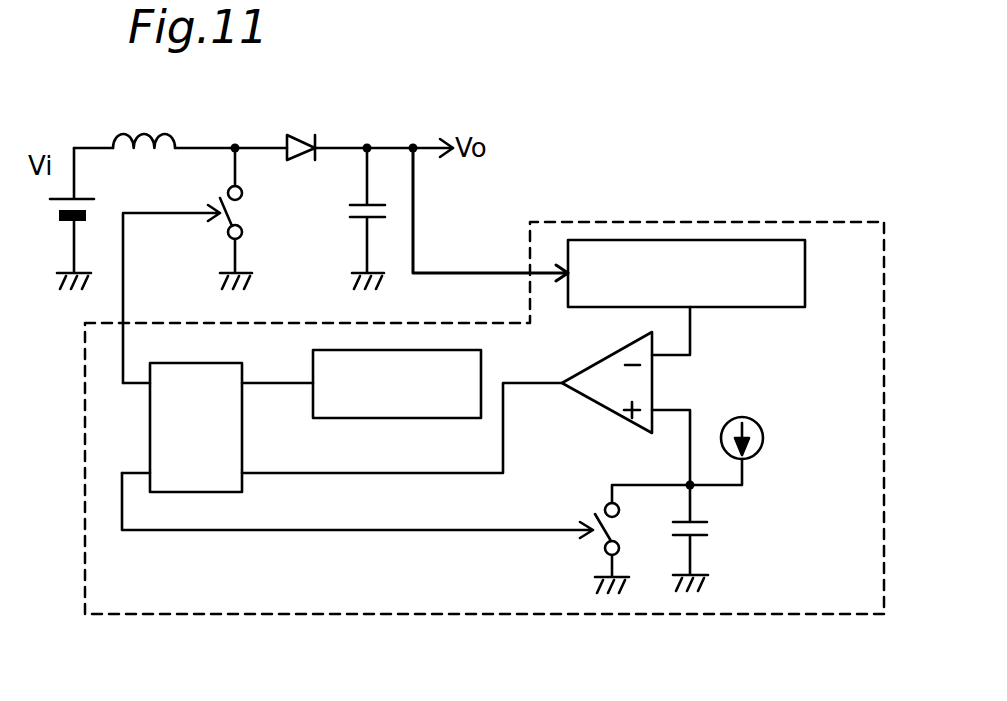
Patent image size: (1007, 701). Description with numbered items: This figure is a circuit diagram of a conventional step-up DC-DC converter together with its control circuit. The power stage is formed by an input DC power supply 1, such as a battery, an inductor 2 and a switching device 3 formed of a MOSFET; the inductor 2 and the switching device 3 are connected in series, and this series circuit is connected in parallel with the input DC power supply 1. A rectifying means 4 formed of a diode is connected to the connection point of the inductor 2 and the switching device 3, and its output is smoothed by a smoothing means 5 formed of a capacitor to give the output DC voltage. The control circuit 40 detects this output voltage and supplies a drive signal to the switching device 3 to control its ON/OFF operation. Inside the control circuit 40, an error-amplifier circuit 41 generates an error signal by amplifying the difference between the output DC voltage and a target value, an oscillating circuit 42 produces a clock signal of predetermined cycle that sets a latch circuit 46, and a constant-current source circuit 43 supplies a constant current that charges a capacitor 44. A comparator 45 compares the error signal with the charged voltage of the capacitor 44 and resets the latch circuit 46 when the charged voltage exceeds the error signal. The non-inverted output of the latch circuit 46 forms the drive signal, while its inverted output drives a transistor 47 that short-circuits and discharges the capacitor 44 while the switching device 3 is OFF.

The input DC power supply 1 is at (62, 222).
The inductor 2 is at (178, 133).
The switching device 3 is at (245, 225).
The rectifying means 4 is at (318, 136).
The smoothing means 5 is at (351, 210).
The control circuit 40 is at (700, 222).
The error-amplifier circuit 41 is at (805, 292).
The oscillating circuit 42 is at (481, 380).
The constant-current source circuit 43 is at (748, 417).
The capacitor 44 is at (708, 531).
The comparator 45 is at (607, 412).
The latch circuit 46 is at (242, 407).
The transistor 47 is at (597, 537).